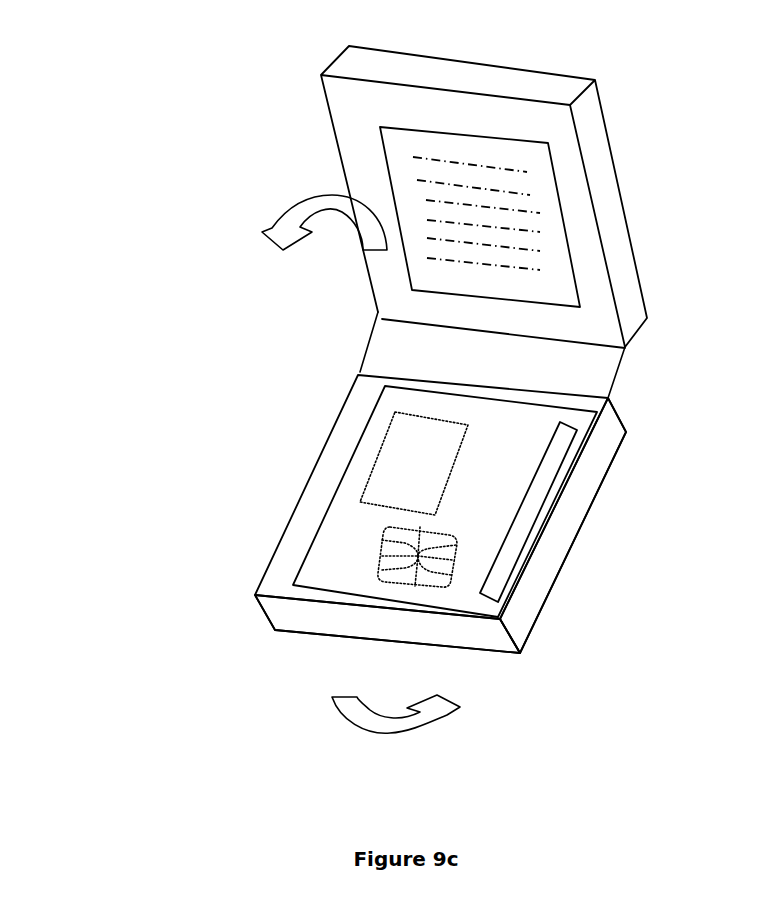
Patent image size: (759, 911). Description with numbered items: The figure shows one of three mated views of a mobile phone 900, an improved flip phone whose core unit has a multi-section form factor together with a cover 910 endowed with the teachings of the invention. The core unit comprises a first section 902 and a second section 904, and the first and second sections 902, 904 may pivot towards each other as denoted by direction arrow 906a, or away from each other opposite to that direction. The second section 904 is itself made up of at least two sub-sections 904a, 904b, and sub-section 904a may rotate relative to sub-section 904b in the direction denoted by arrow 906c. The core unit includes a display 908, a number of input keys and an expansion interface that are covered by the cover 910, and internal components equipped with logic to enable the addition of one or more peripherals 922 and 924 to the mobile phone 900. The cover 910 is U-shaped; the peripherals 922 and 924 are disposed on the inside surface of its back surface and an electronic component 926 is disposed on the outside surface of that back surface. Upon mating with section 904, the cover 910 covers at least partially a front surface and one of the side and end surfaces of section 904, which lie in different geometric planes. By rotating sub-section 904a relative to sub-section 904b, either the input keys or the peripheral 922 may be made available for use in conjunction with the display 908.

The mobile phone 900 is at (79, 109).
The first section 902 is at (483, 80).
The second section 904 is at (243, 310).
The sub-section 904a is at (312, 620).
The sub-section 904b is at (632, 382).
The direction arrow 906a is at (324, 233).
The arrow 906c is at (396, 701).
The display 908 is at (520, 207).
The cover 910 is at (378, 432).
The peripheral 922 is at (528, 515).
The peripheral 924 is at (385, 450).
The electronic component 926 is at (420, 582).